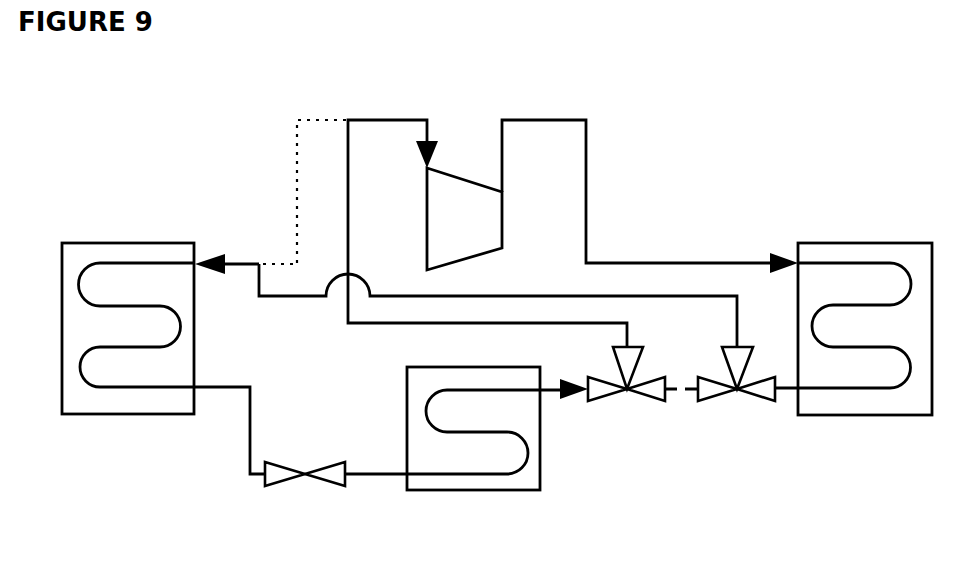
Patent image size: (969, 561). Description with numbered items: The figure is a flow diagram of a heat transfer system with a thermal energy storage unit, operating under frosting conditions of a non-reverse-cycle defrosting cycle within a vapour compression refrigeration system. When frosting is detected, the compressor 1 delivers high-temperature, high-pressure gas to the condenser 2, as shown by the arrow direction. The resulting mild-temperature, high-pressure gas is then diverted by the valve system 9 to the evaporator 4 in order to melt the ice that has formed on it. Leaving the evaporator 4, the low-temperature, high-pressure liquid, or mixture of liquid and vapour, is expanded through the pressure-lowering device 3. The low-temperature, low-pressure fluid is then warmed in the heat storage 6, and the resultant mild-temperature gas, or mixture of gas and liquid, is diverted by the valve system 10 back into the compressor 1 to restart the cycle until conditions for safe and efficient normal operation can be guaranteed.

The compressor 1 is at (464, 219).
The condenser 2 is at (853, 329).
The pressure-lowering device 3 is at (305, 457).
The evaporator 4 is at (163, 358).
The heat storage 6 is at (453, 409).
The valve system 9 is at (736, 386).
The valve system 10 is at (626, 389).